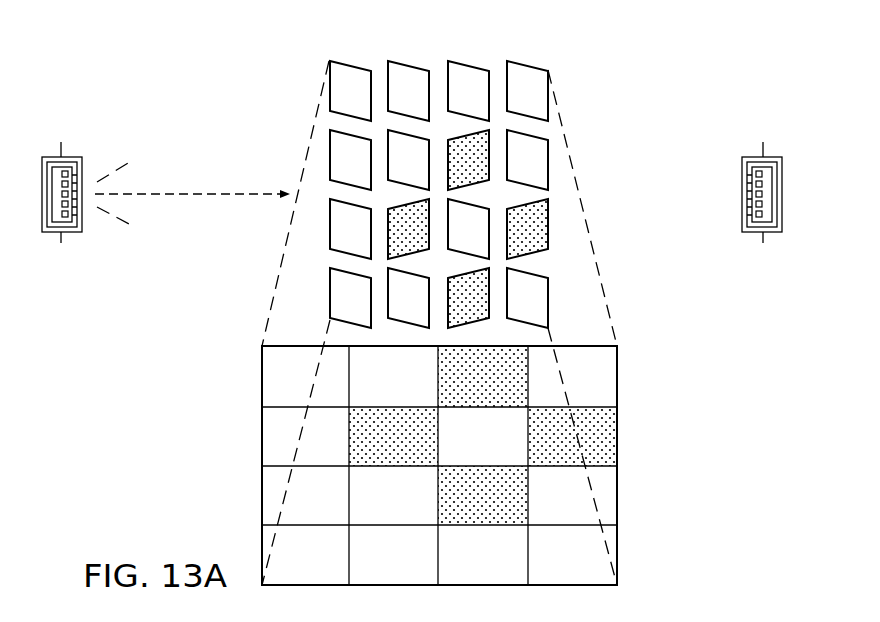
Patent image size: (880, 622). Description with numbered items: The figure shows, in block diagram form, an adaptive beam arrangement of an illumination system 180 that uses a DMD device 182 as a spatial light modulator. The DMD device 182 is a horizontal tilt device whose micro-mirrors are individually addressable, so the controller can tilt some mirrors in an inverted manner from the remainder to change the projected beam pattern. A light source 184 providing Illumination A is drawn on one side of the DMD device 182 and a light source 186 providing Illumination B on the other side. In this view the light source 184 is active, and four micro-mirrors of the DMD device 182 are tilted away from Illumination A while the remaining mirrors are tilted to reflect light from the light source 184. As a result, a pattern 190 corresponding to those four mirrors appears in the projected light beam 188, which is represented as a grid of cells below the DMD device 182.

The illumination system 180 is at (194, 61).
The DMD device 182 is at (548, 53).
The light source 184 is at (53, 155).
The light source 186 is at (770, 155).
The projected light beam 188 is at (602, 378).
The pattern 190 is at (602, 433).